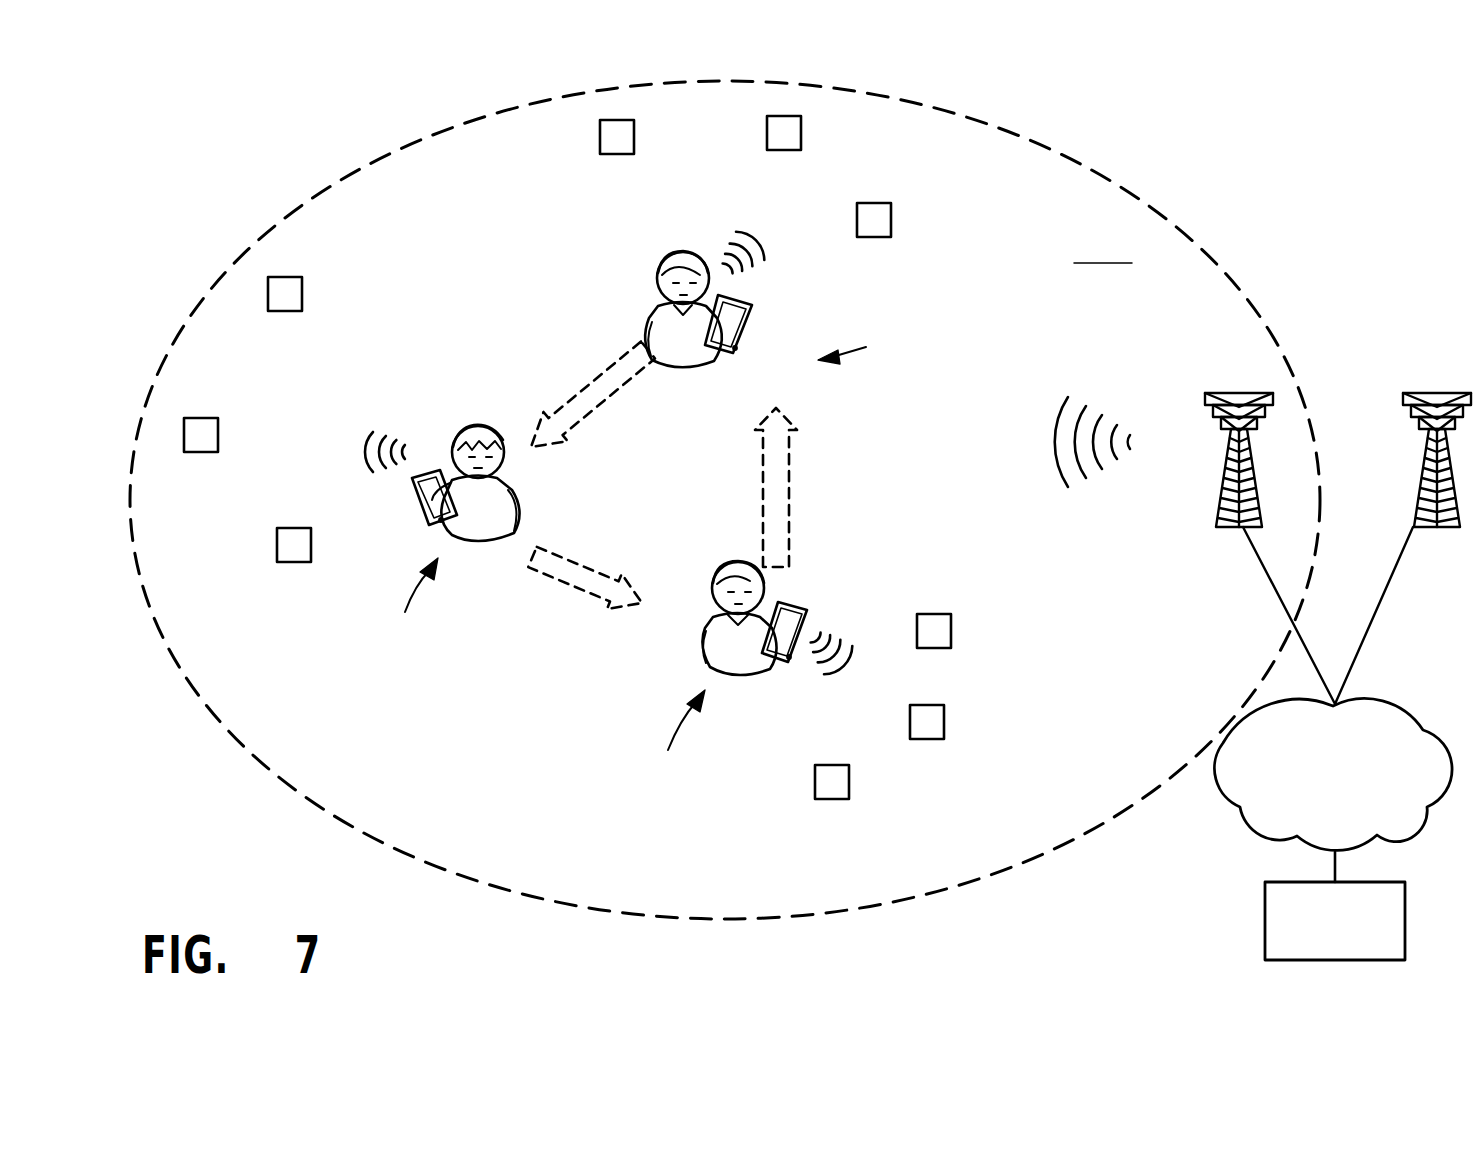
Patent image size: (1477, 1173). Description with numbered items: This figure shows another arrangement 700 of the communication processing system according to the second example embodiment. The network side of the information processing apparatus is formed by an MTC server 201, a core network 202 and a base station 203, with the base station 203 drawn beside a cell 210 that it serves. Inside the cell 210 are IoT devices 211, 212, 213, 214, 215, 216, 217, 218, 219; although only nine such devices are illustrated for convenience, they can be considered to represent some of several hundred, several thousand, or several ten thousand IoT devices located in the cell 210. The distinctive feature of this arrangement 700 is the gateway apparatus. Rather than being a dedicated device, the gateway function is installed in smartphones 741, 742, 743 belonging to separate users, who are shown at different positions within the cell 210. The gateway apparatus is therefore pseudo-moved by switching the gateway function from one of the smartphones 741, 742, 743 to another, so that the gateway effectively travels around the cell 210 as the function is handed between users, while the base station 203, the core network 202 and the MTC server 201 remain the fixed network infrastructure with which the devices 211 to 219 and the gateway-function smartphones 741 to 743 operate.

The wireless communication system 700 is at (220, 188).
The cell 210 is at (1118, 192).
The IoT device 211 is at (302, 289).
The IoT device 212 is at (218, 432).
The IoT device 213 is at (311, 545).
The IoT device 214 is at (849, 780).
The IoT device 215 is at (944, 720).
The IoT device 216 is at (951, 629).
The IoT device 217 is at (891, 218).
The IoT device 218 is at (801, 132).
The IoT device 219 is at (634, 137).
The smartphone 741 is at (436, 470).
The smartphone 742 is at (778, 660).
The smartphone 743 is at (722, 356).
The base station 203 is at (1216, 506).
The core network 202 is at (1378, 723).
The MTC server 201 is at (1272, 912).